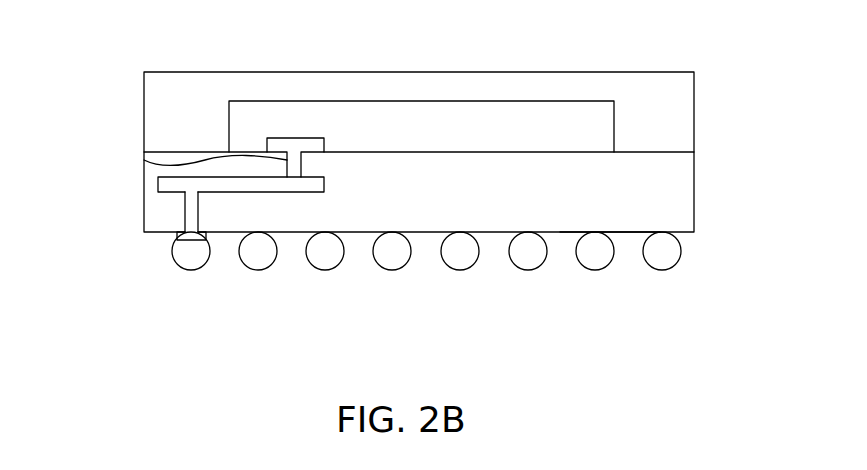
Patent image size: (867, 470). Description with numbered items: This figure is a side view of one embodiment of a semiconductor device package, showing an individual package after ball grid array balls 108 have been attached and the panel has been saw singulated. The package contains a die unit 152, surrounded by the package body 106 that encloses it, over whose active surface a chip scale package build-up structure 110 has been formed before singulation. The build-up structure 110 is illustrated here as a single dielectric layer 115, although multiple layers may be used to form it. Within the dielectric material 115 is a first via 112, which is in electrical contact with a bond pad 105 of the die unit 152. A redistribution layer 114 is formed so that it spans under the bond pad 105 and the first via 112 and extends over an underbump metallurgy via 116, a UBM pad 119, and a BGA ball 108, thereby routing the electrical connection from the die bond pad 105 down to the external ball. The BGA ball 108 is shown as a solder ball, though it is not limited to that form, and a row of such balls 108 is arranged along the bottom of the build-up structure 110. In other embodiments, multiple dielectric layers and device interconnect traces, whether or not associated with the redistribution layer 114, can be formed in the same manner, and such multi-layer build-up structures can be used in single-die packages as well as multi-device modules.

The bond pad 105 is at (287, 137).
The encapsulant / mold compound 106 is at (675, 103).
The ball grid array (BGA) ball 108 is at (680, 258).
The CSP build-up structure 110 is at (706, 152).
The first via 112 is at (144, 160).
The redistribution layer (RDL) 114 is at (158, 181).
The dielectric layer 115 is at (612, 202).
The underbump metallurgy (UBM) via 116 is at (184, 205).
The UBM pad 119 is at (178, 236).
The die unit 152 is at (524, 118).